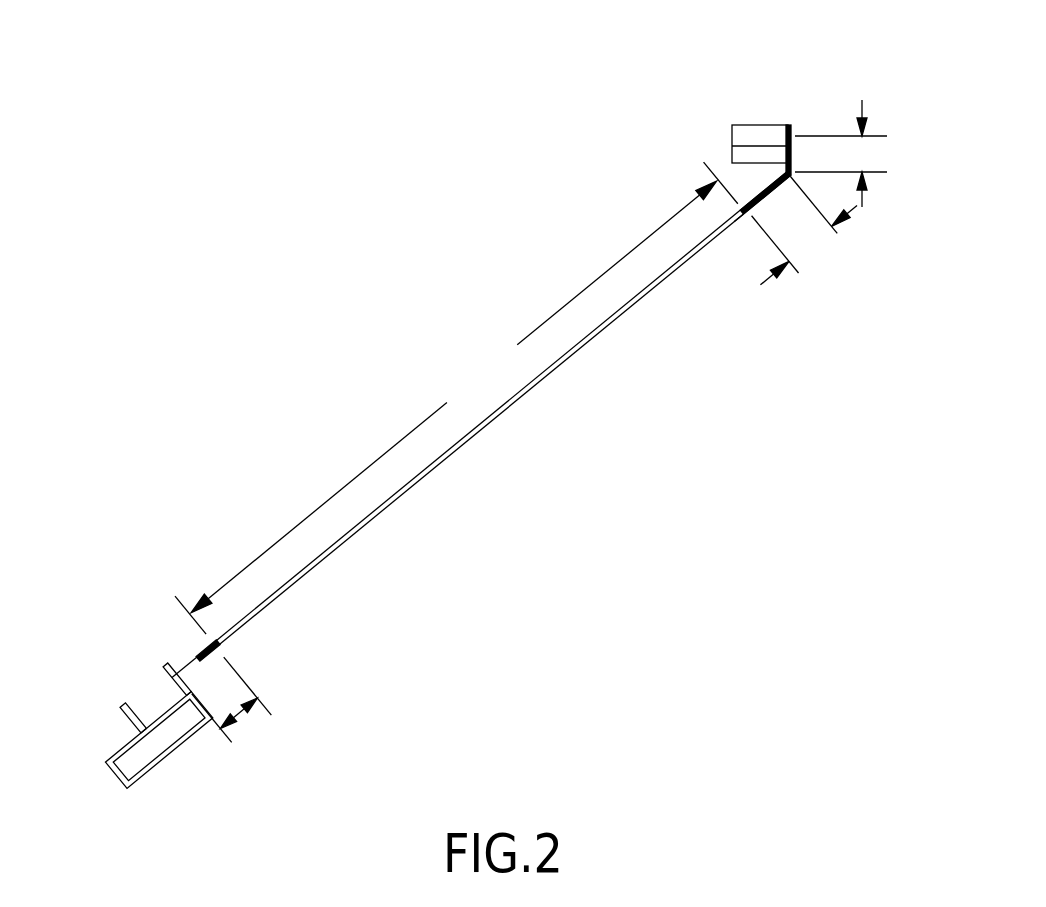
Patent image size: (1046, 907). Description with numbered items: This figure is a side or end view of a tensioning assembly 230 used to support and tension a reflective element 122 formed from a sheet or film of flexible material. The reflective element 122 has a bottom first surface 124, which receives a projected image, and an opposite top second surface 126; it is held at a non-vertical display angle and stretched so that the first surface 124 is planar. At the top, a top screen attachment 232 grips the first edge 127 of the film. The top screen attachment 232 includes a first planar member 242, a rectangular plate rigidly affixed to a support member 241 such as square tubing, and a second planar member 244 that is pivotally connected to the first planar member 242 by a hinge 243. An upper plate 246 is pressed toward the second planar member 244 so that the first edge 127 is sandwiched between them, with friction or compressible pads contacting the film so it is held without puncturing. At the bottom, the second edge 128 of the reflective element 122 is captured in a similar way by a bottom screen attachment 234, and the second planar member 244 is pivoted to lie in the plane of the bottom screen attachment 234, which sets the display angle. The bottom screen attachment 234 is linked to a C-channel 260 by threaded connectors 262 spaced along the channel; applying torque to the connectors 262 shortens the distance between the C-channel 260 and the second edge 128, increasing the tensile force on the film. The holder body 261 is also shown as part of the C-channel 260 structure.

The reflective element 122 is at (445, 457).
The first surface 124 is at (573, 353).
The second surface 126 is at (617, 310).
The first edge 127 is at (744, 216).
The second edge 128 is at (231, 628).
The tensioning assembly 230 is at (329, 270).
The top screen attachment 232 is at (762, 190).
The bottom screen attachment 234 is at (242, 656).
The support member 241 is at (738, 124).
The first planar member 242 is at (791, 150).
The hinge 243 is at (790, 176).
The second planar member 244 is at (756, 222).
The upper plate 246 is at (745, 206).
The C-channel 260 is at (128, 711).
The holder body 261 is at (105, 755).
The threaded connectors 262 is at (166, 672).